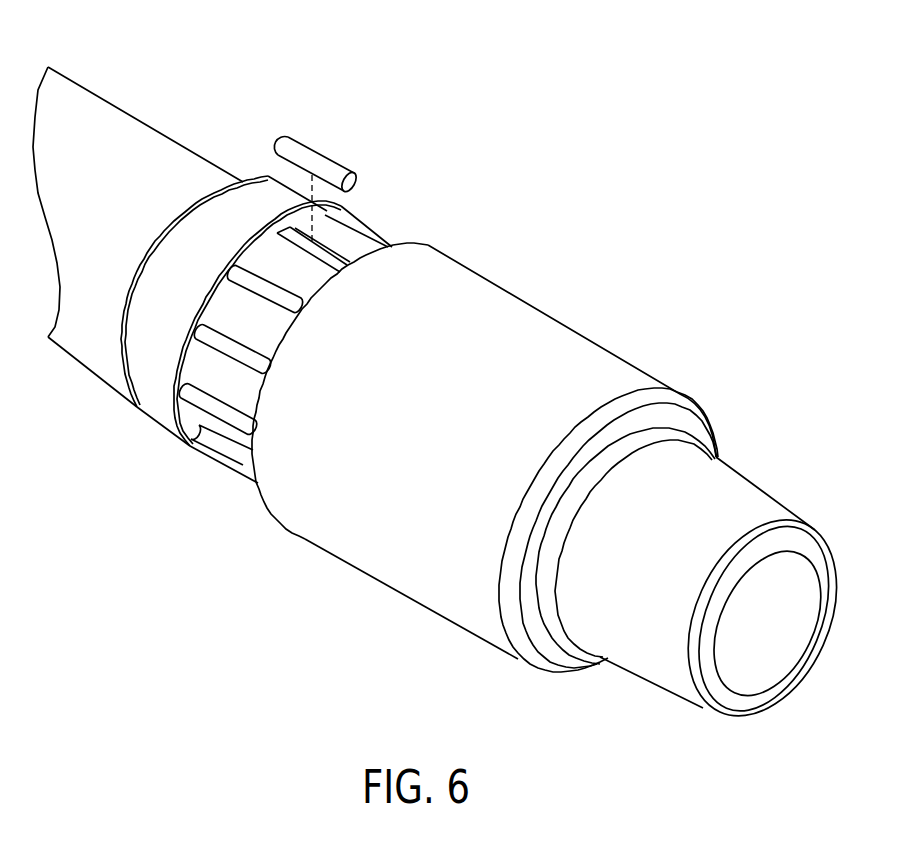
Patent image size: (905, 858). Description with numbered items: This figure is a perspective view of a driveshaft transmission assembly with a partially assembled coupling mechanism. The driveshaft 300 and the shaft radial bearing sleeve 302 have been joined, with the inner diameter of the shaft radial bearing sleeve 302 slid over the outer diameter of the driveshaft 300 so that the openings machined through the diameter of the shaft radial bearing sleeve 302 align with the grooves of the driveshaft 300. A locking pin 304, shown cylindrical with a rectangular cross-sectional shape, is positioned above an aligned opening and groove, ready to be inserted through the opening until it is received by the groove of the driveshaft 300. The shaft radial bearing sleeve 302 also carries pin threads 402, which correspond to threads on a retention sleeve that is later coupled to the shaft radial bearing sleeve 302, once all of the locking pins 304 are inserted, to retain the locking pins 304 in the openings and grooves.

The driveshaft 300 is at (612, 367).
The shaft radial bearing sleeve 302 is at (65, 97).
The locking pins 304 is at (305, 157).
The pin threads 402 is at (187, 252).